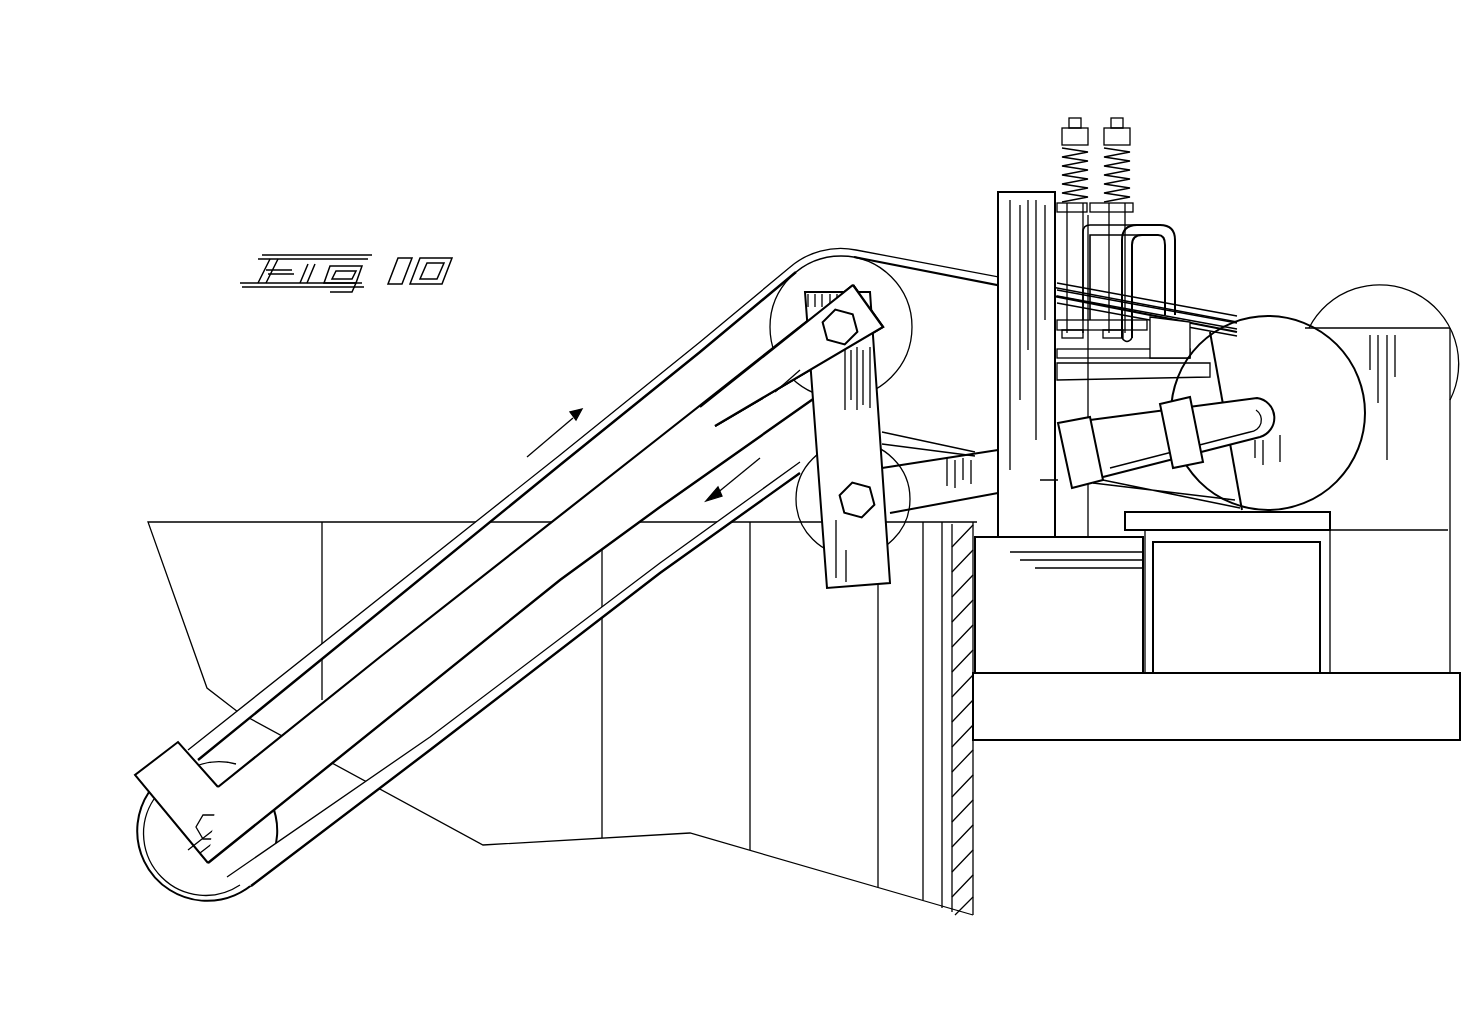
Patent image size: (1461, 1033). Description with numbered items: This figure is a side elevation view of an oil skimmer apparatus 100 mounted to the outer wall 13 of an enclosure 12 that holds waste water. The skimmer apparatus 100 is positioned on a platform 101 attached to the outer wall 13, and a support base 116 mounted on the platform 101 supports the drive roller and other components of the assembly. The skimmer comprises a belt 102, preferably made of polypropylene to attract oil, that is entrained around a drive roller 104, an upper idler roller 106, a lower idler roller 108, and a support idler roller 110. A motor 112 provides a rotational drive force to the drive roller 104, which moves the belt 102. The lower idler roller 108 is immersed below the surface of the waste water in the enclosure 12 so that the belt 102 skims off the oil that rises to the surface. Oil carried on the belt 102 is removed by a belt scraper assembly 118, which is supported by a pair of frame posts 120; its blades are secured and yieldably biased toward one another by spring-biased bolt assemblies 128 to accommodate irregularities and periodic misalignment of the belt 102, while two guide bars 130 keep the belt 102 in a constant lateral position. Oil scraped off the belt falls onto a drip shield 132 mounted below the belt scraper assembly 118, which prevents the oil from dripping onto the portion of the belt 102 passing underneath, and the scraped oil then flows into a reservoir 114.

The enclosure 12 is at (373, 517).
The outer wall 13 is at (822, 704).
The oil skimmer apparatus 100 is at (1318, 200).
The platform 101 is at (1237, 705).
The belt 102 is at (655, 385).
The drive roller 104 is at (1218, 473).
The upper idler roller 106 is at (835, 278).
The lower idler roller 108 is at (237, 868).
The support idler roller 110 is at (800, 540).
The motor 112 is at (1390, 305).
The reservoir 114 is at (1022, 648).
The support base 116 is at (1280, 538).
The belt scraper assembly 118 is at (992, 175).
The frame posts 120 is at (1005, 232).
The spring-biased bolt assemblies 128 is at (1055, 122).
The guide bars 130 is at (1160, 230).
The drip shield 132 is at (1188, 335).